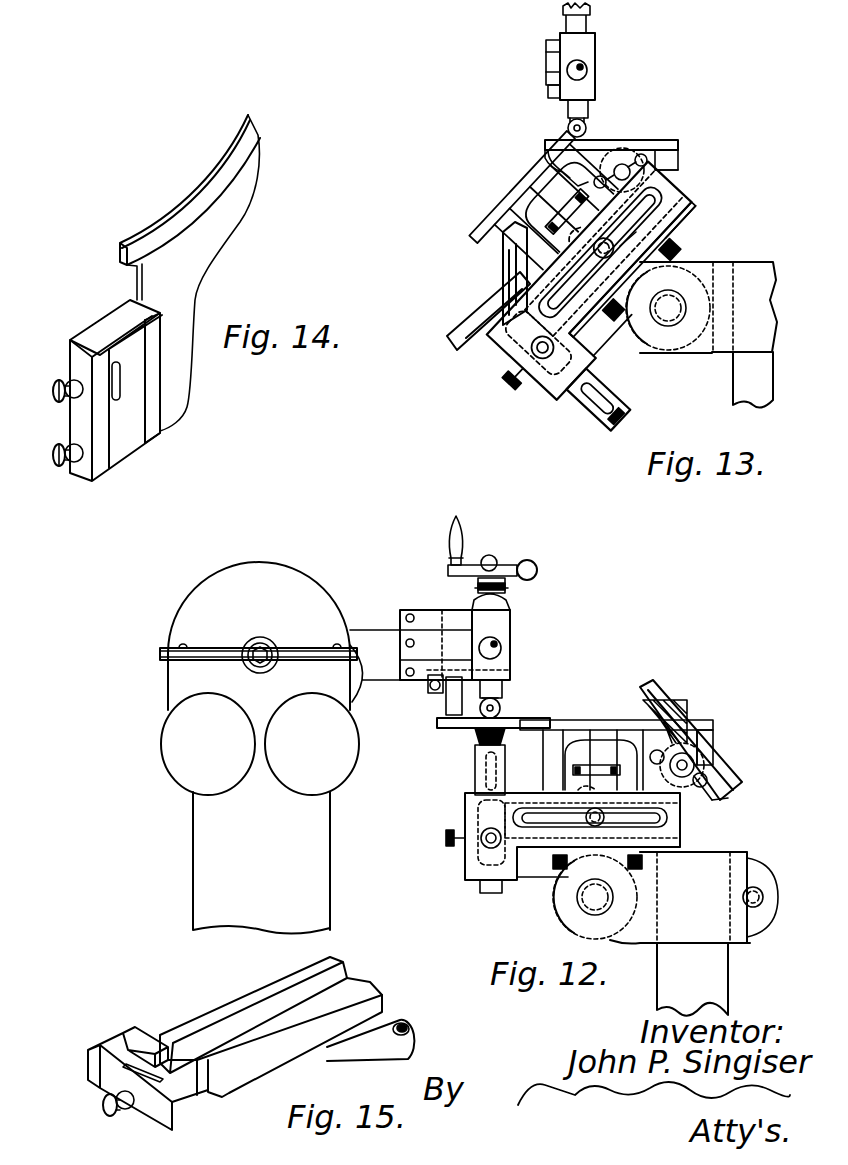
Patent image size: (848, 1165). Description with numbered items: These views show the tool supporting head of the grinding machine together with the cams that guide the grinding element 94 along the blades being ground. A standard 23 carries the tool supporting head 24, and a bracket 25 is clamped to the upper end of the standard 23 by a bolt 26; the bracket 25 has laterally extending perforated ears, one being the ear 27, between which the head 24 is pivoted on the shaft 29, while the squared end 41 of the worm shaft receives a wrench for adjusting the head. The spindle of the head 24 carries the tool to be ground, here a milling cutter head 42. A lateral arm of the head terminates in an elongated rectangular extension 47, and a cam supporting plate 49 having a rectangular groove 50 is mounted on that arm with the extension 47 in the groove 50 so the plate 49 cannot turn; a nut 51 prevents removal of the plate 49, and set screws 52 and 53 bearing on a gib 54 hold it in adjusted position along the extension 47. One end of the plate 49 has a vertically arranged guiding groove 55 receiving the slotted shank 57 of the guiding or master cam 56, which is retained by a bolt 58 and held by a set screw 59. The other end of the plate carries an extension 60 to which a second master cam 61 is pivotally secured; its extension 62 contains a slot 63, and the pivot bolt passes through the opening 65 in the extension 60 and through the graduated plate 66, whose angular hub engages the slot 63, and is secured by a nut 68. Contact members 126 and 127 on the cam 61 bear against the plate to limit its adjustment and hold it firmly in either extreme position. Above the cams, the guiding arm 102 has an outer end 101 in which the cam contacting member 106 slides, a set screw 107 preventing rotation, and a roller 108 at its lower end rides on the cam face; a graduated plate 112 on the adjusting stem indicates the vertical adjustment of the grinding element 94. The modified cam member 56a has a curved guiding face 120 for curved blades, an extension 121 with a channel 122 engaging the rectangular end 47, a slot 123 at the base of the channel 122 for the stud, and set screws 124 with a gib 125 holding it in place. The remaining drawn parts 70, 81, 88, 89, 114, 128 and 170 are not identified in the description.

In FIG. 13, the standard 23 is at (740, 390).
In FIG. 12, the standard 23 is at (725, 978).
In FIG. 13, the tool supporting head 24 is at (660, 262).
In FIG. 12, the tool supporting head 24 is at (570, 870).
In FIG. 13, the bracket 25 is at (752, 268).
In FIG. 12, the bracket 25 is at (693, 897).
In FIG. 12, the bolt 26 is at (760, 890).
In FIG. 13, the perforated ear 27 is at (697, 350).
In FIG. 12, the perforated ear 27 is at (628, 941).
In FIG. 13, the shaft 29 is at (662, 323).
In FIG. 12, the shaft 29 is at (584, 907).
In FIG. 13, the squared end of shaft 41 is at (647, 249).
In FIG. 13, the milling cutter head 42 is at (503, 252).
In FIG. 12, the milling cutter head 42 is at (705, 722).
In FIG. 13, the elongated rectangular extension 47 is at (628, 240).
In FIG. 12, the elongated rectangular extension 47 is at (566, 820).
In FIG. 13, the cam supporting plate 49 is at (585, 330).
In FIG. 12, the cam supporting plate 49 is at (665, 853).
In FIG. 15, the cam supporting plate 49 is at (208, 1010).
In FIG. 13, the rectangular groove 50 is at (602, 281).
In FIG. 12, the rectangular groove 50 is at (683, 826).
In FIG. 15, the rectangular groove 50 is at (336, 988).
In FIG. 13, the nut 51 is at (622, 255).
In FIG. 12, the nut 51 is at (593, 828).
In FIG. 13, the set screw 52 is at (605, 330).
In FIG. 12, the set screw 52 is at (560, 866).
In FIG. 13, the set screw 53 is at (655, 278).
In FIG. 12, the set screw 53 is at (636, 866).
In FIG. 12, the gib 54 is at (678, 846).
In FIG. 15, the gib 54 is at (273, 993).
In FIG. 13, the guiding groove 55 is at (557, 398).
In FIG. 12, the guiding groove 55 is at (478, 882).
In FIG. 15, the guiding groove 55 is at (122, 1045).
In FIG. 13, the guiding or master cam 56 is at (470, 324).
In FIG. 12, the guiding or master cam 56 is at (445, 733).
In FIG. 14, the modified cam member 56a is at (192, 280).
In FIG. 13, the slotted shank 57 is at (607, 407).
In FIG. 12, the slotted shank 57 is at (475, 785).
In FIG. 13, the bolt 58 is at (528, 360).
In FIG. 12, the bolt 58 is at (482, 845).
In FIG. 13, the set screw 59 is at (510, 395).
In FIG. 12, the set screw 59 is at (445, 838).
In FIG. 15, the set screw 59 is at (104, 1107).
In FIG. 12, the extension 60 is at (689, 796).
In FIG. 15, the extension 60 is at (364, 1058).
In FIG. 13, the master or guiding cam 61 is at (672, 141).
In FIG. 12, the master or guiding cam 61 is at (730, 772).
In FIG. 13, the extension 62 is at (537, 207).
In FIG. 12, the extension 62 is at (583, 748).
In FIG. 13, the slot 63 is at (546, 209).
In FIG. 12, the slot 63 is at (580, 770).
In FIG. 15, the opening 65 is at (405, 1023).
In FIG. 13, the graduated plate 66 is at (628, 150).
In FIG. 12, the graduated plate 66 is at (700, 762).
In FIG. 13, the nut 68 is at (637, 175).
In FIG. 12, the standard 70 is at (200, 826).
In FIG. 12, the arm 81 is at (360, 638).
In FIG. 12, the bolt 88 is at (270, 645).
In FIG. 12, the head 89 is at (315, 593).
In FIG. 12, the grinding element 94 is at (512, 670).
In FIG. 13, the outer end of guiding arm 101 is at (596, 62).
In FIG. 12, the outer end of guiding arm 101 is at (504, 663).
In FIG. 13, the guiding arm 102 is at (547, 66).
In FIG. 12, the guiding arm 102 is at (455, 625).
In FIG. 13, the cam contacting member 106 is at (590, 108).
In FIG. 12, the cam contacting member 106 is at (503, 692).
In FIG. 13, the set screw 107 is at (553, 92).
In FIG. 13, the roller 108 is at (588, 130).
In FIG. 12, the roller 108 is at (501, 712).
In FIG. 13, the graduated plate 112 is at (592, 30).
In FIG. 12, the graduated plate 112 is at (507, 607).
In FIG. 12, the pin 114 is at (448, 705).
In FIG. 14, the curved guiding face 120 is at (181, 208).
In FIG. 14, the extension 121 is at (107, 320).
In FIG. 14, the channel 122 is at (127, 450).
In FIG. 14, the slot 123 is at (120, 385).
In FIG. 14, the set screws 124 is at (60, 445).
In FIG. 14, the gib 125 is at (103, 472).
In FIG. 13, the contact member 126 is at (559, 254).
In FIG. 12, the contact member 126 is at (597, 783).
In FIG. 13, the contact member 127 is at (678, 170).
In FIG. 12, the contact member 127 is at (720, 804).
In FIG. 13, the hole 128 is at (588, 70).
In FIG. 12, the hole 128 is at (504, 648).
In FIG. 12, the handle 170 is at (532, 562).